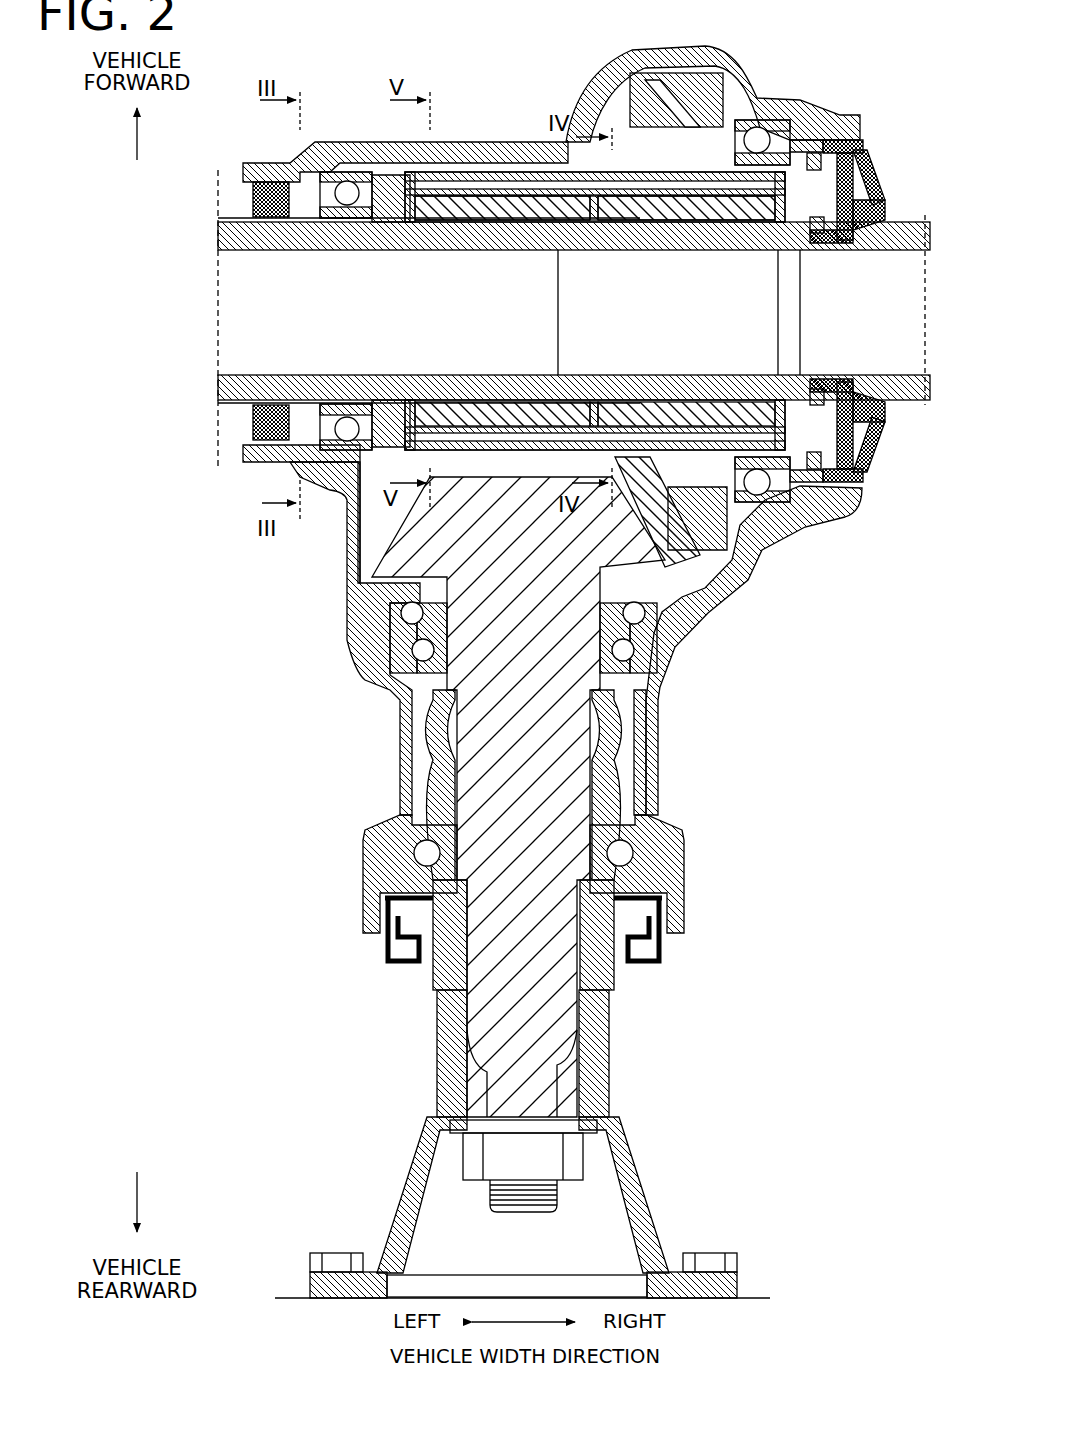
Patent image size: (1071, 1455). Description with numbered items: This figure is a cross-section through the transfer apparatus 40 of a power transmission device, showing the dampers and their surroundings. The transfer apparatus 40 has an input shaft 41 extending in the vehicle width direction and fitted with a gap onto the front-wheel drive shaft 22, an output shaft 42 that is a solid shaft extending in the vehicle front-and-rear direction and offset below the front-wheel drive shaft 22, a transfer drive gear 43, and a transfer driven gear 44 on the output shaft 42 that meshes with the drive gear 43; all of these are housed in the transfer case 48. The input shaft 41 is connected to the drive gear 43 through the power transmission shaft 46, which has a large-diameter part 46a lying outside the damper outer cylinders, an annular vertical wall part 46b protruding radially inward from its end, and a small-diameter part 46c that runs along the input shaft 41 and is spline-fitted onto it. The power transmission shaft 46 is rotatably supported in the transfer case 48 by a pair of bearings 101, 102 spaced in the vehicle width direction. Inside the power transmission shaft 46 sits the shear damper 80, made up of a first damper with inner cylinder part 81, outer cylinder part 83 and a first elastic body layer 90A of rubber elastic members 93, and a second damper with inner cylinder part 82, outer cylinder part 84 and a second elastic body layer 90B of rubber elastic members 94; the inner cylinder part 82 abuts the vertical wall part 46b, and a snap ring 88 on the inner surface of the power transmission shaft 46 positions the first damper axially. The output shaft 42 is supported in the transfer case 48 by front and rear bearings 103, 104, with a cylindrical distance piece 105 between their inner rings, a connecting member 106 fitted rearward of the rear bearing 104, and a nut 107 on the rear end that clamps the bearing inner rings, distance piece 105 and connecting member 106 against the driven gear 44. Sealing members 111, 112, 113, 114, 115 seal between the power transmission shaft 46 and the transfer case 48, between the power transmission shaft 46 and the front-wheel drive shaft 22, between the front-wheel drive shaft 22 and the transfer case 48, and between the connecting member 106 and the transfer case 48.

The front-wheel drive shaft 22 is at (908, 402).
The transfer apparatus 40 is at (882, 78).
The input shaft 41 is at (218, 385).
The output shaft 42 is at (487, 770).
The transfer drive gear 43 is at (630, 110).
The transfer driven gear 44 is at (347, 560).
The power transmission shaft 46 is at (218, 415).
The large-diameter part 46a is at (470, 178).
The vertical wall part 46b is at (390, 186).
The small-diameter part 46c is at (347, 250).
The transfer case 48 is at (752, 590).
The damper 80 is at (500, 172).
The inner cylinder part 81 is at (655, 250).
The inner cylinder part 82 is at (431, 250).
The outer cylinder part 83 is at (744, 250).
The outer cylinder part 84 is at (530, 250).
The snap ring 88 is at (800, 248).
The first elastic body layer 90A is at (697, 250).
The second elastic body layer 90B is at (482, 250).
The elastic members 93 is at (686, 281).
The elastic members 94 is at (502, 281).
The bearing 101 is at (355, 170).
The bearing 102 is at (762, 120).
The bearing 103 is at (665, 642).
The bearing 104 is at (655, 855).
The distance piece 105 is at (648, 740).
The connecting member 106 is at (622, 1050).
The nut 107 is at (585, 1155).
The sealing member 111 is at (270, 185).
The sealing member 112 is at (815, 108).
The sealing member 113 is at (850, 182).
The sealing member 114 is at (878, 218).
The sealing member 115 is at (650, 950).